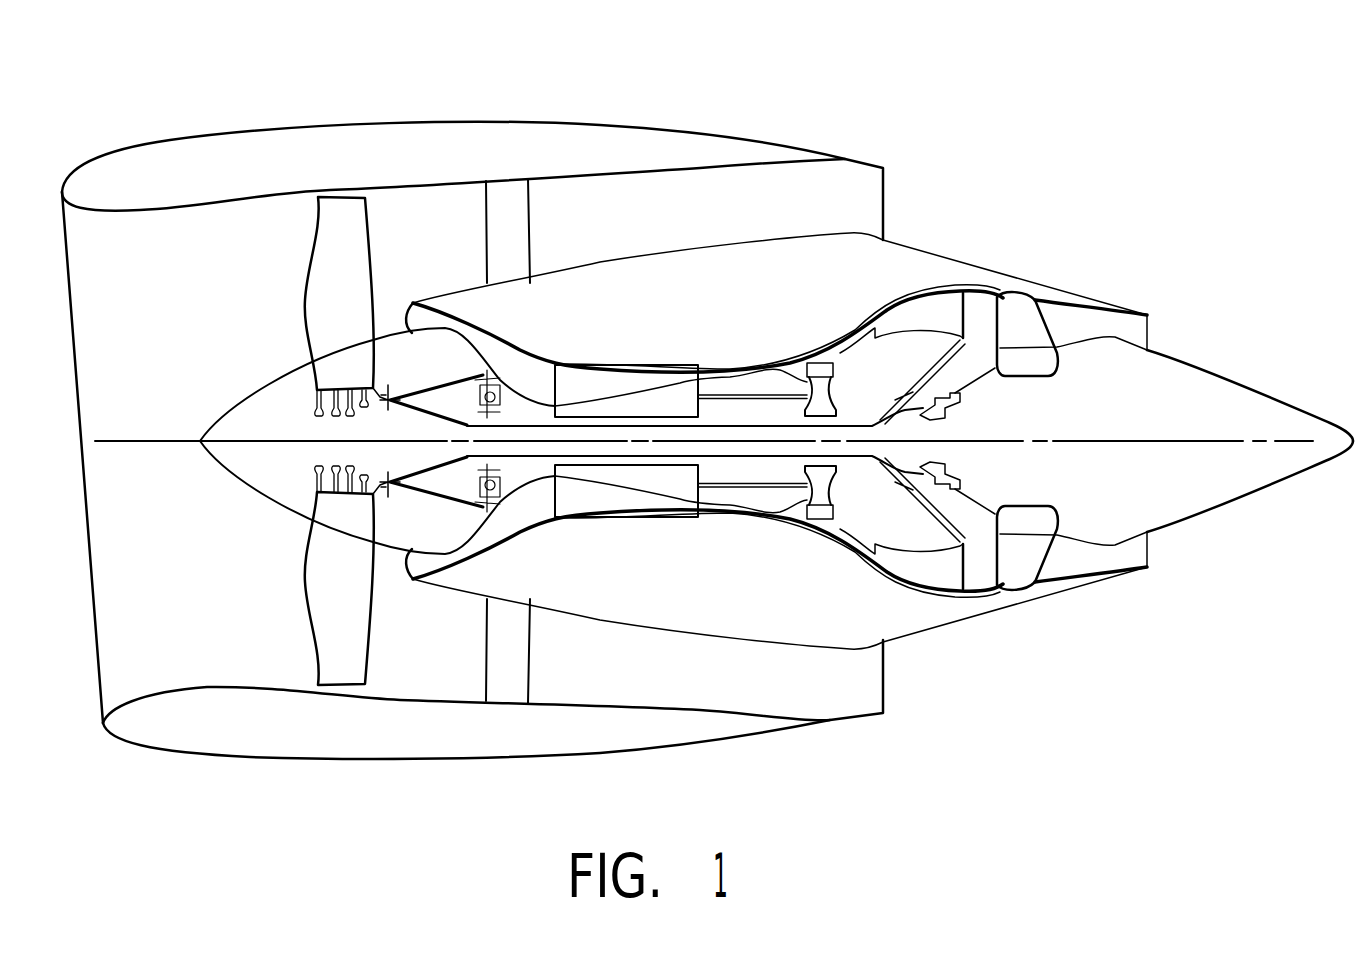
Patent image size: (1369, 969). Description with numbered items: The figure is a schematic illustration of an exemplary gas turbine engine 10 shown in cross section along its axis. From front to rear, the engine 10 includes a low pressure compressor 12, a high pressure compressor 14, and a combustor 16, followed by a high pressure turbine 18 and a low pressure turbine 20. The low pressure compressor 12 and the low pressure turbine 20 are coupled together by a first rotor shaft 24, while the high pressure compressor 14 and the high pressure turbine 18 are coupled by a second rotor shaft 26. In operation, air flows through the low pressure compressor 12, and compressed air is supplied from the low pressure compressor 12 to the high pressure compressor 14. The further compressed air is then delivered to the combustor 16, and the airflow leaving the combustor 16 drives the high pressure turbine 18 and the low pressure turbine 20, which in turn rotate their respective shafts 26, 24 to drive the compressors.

The gas turbine engine 10 is at (748, 80).
The low pressure compressor 12 is at (337, 290).
The high pressure compressor 14 is at (587, 372).
The combustor 16 is at (778, 368).
The high pressure turbine 18 is at (815, 358).
The low pressure turbine 20 is at (923, 308).
The first rotor shaft 24 is at (610, 456).
The second rotor shaft 26 is at (780, 401).